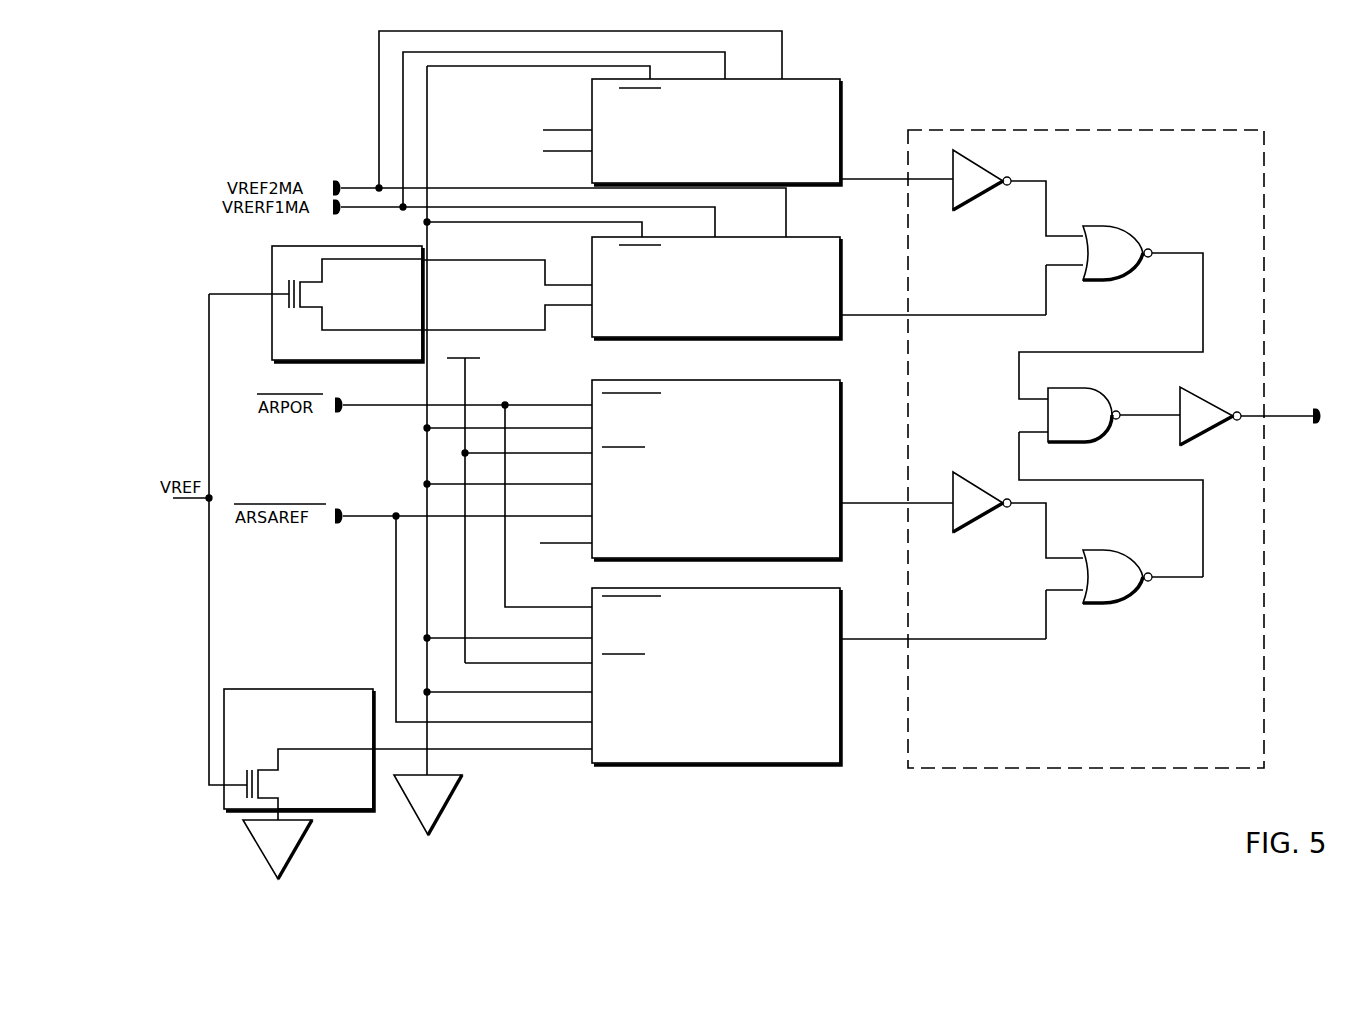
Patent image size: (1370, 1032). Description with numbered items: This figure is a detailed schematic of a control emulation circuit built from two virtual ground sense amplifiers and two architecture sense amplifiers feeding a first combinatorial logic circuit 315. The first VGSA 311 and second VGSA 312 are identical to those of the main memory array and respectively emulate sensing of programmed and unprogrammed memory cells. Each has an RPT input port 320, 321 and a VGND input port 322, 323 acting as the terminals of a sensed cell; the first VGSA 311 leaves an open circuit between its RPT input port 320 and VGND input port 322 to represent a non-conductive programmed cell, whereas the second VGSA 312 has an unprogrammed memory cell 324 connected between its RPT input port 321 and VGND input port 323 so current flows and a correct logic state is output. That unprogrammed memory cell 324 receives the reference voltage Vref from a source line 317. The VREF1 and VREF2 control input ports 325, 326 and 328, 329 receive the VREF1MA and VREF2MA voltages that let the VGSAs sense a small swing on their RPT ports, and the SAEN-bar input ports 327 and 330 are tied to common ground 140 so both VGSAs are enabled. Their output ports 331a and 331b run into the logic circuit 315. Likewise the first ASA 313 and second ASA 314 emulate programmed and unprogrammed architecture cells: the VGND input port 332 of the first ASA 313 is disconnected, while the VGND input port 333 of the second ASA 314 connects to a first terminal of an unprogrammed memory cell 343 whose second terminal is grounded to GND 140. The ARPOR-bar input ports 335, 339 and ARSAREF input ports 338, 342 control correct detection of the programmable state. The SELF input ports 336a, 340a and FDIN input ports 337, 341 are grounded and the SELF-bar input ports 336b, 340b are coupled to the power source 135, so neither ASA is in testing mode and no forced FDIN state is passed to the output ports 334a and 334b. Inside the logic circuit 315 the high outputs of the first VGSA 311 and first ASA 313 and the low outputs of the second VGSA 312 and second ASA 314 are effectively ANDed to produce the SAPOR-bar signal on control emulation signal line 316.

The power source 135 is at (467, 386).
The common ground 140 is at (260, 846).
The first VGSA 311 is at (830, 151).
The second VGSA 312 is at (830, 305).
The first ASA 313 is at (830, 547).
The second ASA 314 is at (830, 753).
The first combinatorial logic circuit 315 is at (1230, 743).
The control emulation signal line 316 is at (1295, 420).
The source line 317 is at (195, 503).
The RPT input port 320 is at (560, 129).
The RPT input port 321 is at (576, 285).
The VGND input port 322 is at (561, 152).
The VGND input port 323 is at (580, 307).
The unprogrammed memory cell 324 is at (356, 353).
The first control input port 325 is at (726, 62).
The second control input port 326 is at (787, 66).
The third control input port 327 is at (652, 79).
The first control input port 328 is at (716, 222).
The second control input port 329 is at (788, 226).
The third control input port 330 is at (643, 237).
The output port 331a is at (845, 178).
The output port 331b is at (845, 314).
The VGND control input port 332 is at (578, 543).
The VGND control input port 333 is at (550, 749).
The output port 334a is at (845, 502).
The output port 334b is at (845, 638).
The ARPOR-bar input port 335 is at (575, 405).
The SELF input port 336a is at (580, 428).
The SELF-bar input port 336b is at (580, 453).
The FDIN input port 337 is at (578, 484).
The ARSAREF input port 338 is at (578, 515).
The ARPOR-bar input port 339 is at (570, 607).
The SELF input port 340a is at (555, 638).
The SELF-bar input port 340b is at (555, 663).
The FDIN input port 341 is at (550, 692).
The ARSAREF input port 342 is at (550, 722).
The unprogrammed memory cell 343 is at (298, 792).